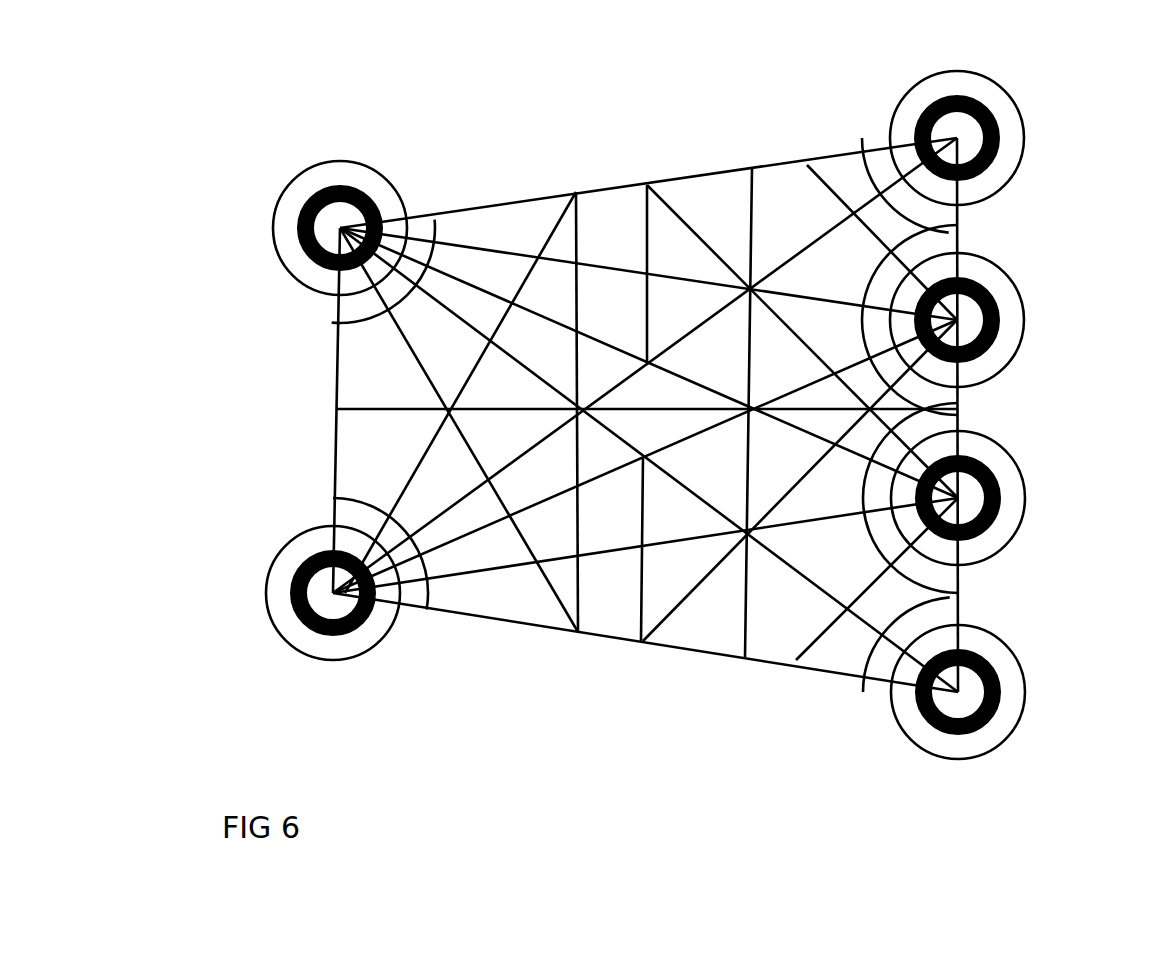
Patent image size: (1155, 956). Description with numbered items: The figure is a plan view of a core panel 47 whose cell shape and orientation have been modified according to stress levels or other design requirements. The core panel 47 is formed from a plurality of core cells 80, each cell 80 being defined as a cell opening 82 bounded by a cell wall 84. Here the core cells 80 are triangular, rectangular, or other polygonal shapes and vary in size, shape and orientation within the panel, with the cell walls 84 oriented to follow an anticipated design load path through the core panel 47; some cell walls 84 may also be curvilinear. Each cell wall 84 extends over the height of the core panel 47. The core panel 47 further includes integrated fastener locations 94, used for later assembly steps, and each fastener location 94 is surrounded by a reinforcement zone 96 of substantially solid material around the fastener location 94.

The core panel 47 is at (439, 123).
The cell 80 is at (675, 305).
The cell opening 82 is at (622, 515).
The cell wall 84 is at (820, 298).
The fastener location 94 is at (333, 233).
The reinforcement zone 96 is at (990, 662).